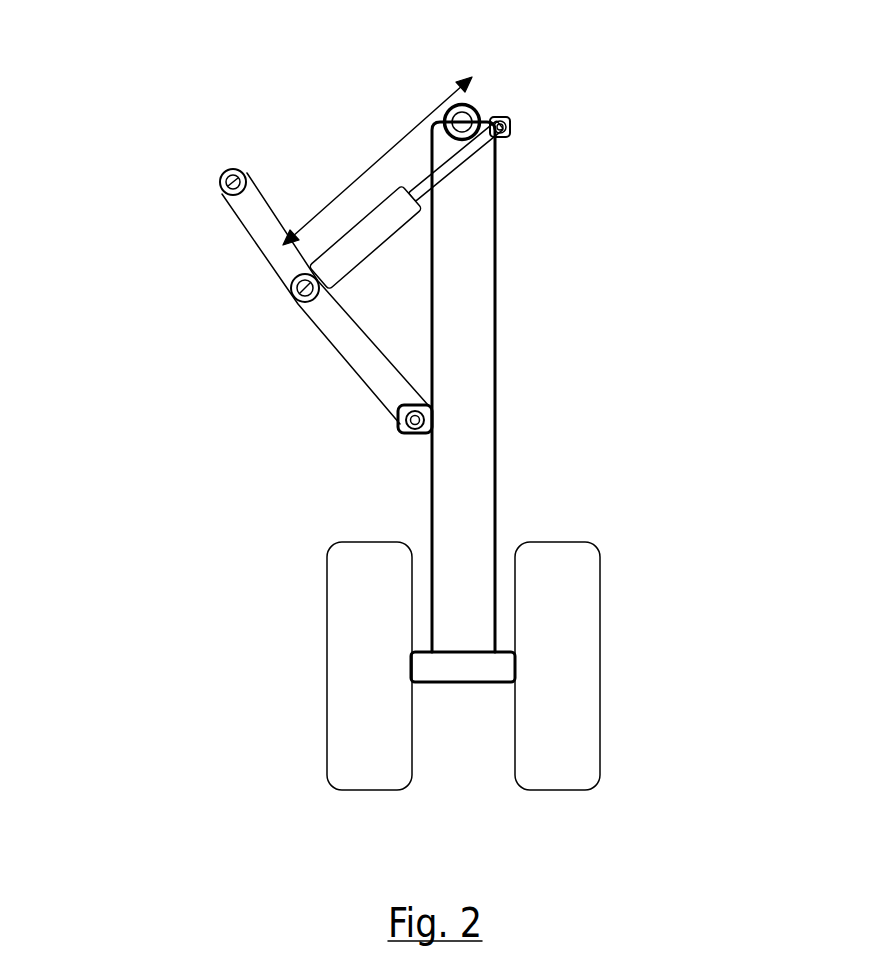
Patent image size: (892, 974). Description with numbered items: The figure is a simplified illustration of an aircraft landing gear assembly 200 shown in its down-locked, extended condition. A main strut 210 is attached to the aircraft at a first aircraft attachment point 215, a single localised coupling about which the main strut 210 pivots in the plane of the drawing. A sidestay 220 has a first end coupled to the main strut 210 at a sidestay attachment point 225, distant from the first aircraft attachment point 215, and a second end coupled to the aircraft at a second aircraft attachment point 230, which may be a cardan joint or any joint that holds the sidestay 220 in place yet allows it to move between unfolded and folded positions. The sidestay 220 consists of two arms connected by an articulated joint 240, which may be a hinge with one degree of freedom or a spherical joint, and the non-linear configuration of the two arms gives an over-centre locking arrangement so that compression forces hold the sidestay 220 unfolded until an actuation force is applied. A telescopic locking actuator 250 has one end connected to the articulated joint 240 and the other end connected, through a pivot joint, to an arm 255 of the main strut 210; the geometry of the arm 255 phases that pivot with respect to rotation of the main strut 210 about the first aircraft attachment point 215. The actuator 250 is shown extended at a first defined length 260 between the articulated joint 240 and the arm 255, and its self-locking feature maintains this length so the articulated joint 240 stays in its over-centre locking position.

The landing gear assembly 200 is at (422, 397).
The main strut 210 is at (497, 318).
The first aircraft attachment point 215 is at (475, 106).
The sidestay 220 is at (332, 352).
The sidestay attachment point 225 is at (398, 428).
The second aircraft attachment point 230 is at (222, 185).
The articulated joint 240 is at (292, 298).
The telescopic locking actuator 250 is at (367, 217).
The arm 255 is at (510, 122).
The first defined length 260 is at (372, 163).